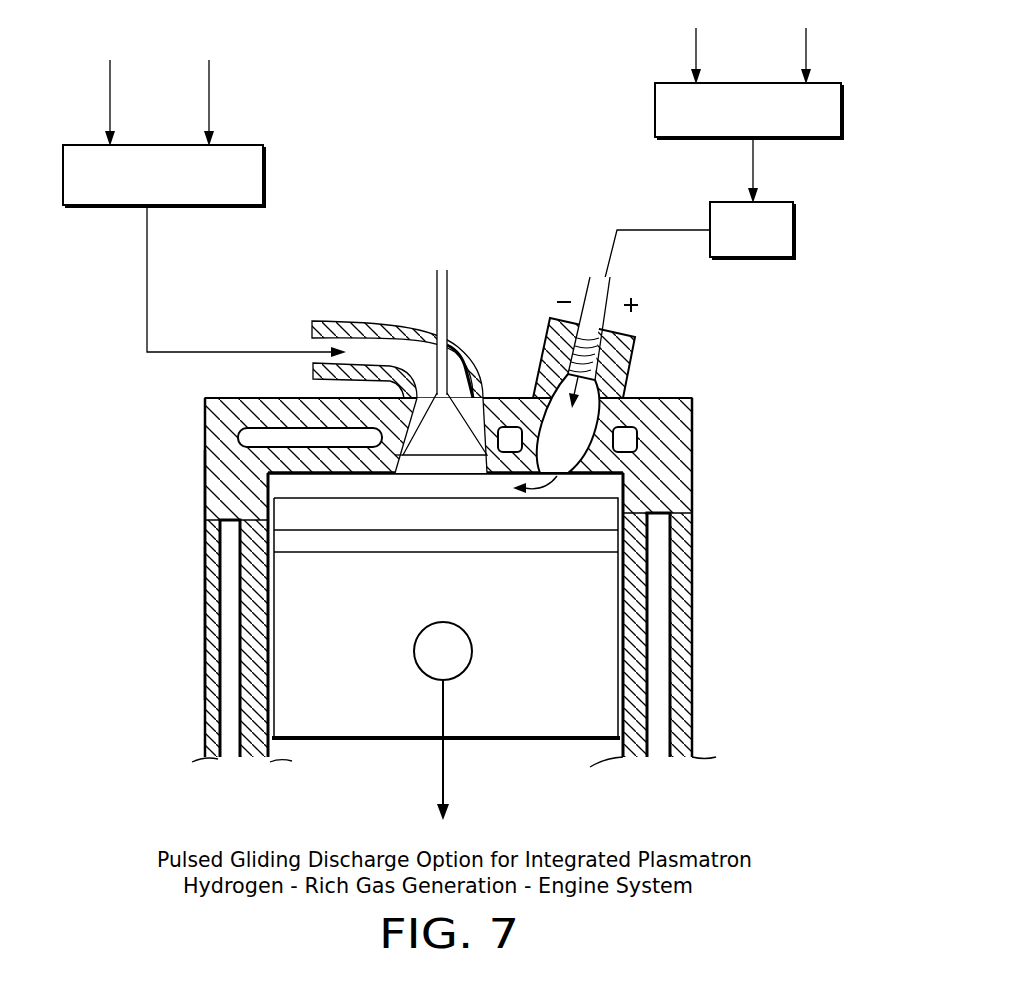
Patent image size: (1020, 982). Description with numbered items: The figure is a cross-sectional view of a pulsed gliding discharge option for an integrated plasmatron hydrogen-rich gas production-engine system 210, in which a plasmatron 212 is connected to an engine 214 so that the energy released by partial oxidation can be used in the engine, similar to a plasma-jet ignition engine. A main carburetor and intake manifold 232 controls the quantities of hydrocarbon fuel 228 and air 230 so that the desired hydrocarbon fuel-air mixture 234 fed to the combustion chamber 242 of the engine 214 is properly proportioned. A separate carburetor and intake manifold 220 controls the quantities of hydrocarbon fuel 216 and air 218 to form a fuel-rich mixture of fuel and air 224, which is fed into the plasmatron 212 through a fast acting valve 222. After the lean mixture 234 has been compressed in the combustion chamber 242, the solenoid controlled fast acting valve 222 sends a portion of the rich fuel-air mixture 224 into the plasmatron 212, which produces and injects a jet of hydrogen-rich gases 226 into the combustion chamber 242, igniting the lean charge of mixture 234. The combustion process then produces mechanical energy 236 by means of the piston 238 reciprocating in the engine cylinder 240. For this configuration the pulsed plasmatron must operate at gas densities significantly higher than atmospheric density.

The integrated plasmatron hydrogen-rich gas production-engine system 210 is at (478, 553).
The plasmatron 212 is at (630, 364).
The engine 214 is at (693, 598).
The hydrocarbon fuel 216 is at (697, 45).
The air 218 is at (806, 45).
The carburetor and intake manifold 220 is at (655, 115).
The fast acting valve (FAV) 222 is at (795, 230).
The fuel-rich mixture of fuel and air 224 is at (754, 163).
The hydrogen-rich gases 226 is at (638, 381).
The hydrocarbon fuel 228 is at (110, 88).
The air 230 is at (209, 88).
The main carburetor and intake manifold 232 is at (265, 153).
The hydrocarbon fuel-air mixture 234 is at (149, 243).
The mechanical energy 236 is at (442, 773).
The piston 238 is at (515, 741).
The engine cylinder 240 is at (205, 592).
The combustion chamber 242 is at (330, 500).